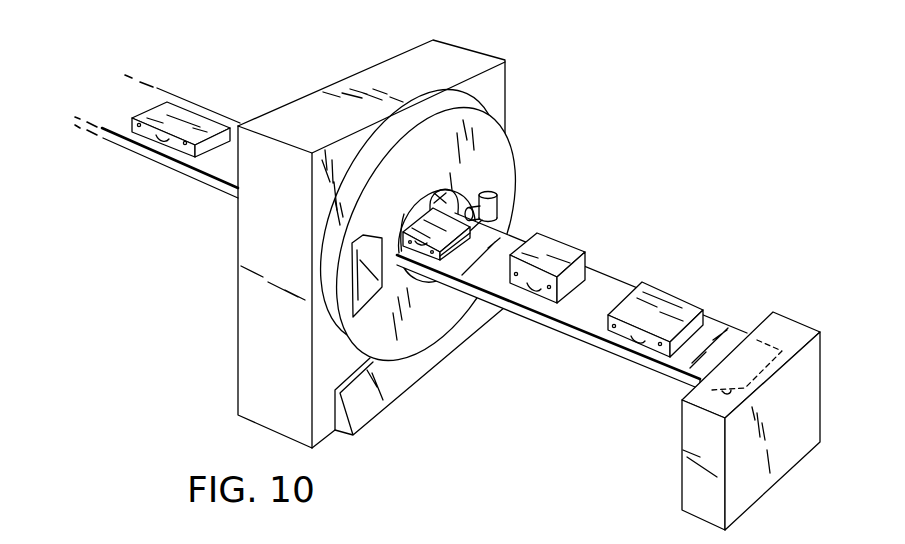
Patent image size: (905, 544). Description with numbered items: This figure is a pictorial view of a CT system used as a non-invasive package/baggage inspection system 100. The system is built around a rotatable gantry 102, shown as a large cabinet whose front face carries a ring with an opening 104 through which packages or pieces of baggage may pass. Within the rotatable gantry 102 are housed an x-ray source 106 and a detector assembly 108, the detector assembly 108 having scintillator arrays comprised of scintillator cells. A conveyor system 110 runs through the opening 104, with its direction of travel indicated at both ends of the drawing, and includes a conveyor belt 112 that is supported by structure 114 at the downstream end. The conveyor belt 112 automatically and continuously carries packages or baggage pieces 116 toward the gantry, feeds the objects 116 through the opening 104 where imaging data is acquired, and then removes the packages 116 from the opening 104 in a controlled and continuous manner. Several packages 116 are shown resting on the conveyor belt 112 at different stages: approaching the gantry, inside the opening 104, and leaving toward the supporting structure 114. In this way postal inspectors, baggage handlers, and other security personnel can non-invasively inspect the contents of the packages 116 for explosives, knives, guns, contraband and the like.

The package/baggage inspection system 100 is at (681, 158).
The rotatable gantry 102 is at (503, 153).
The opening 104 is at (445, 197).
The x-ray source 106 is at (497, 204).
The detector assembly 108 is at (372, 293).
The conveyor system 110 is at (63, 152).
The conveyor belt 112 is at (206, 168).
The structure 114 is at (812, 395).
The packages or baggage pieces 116 is at (190, 118).